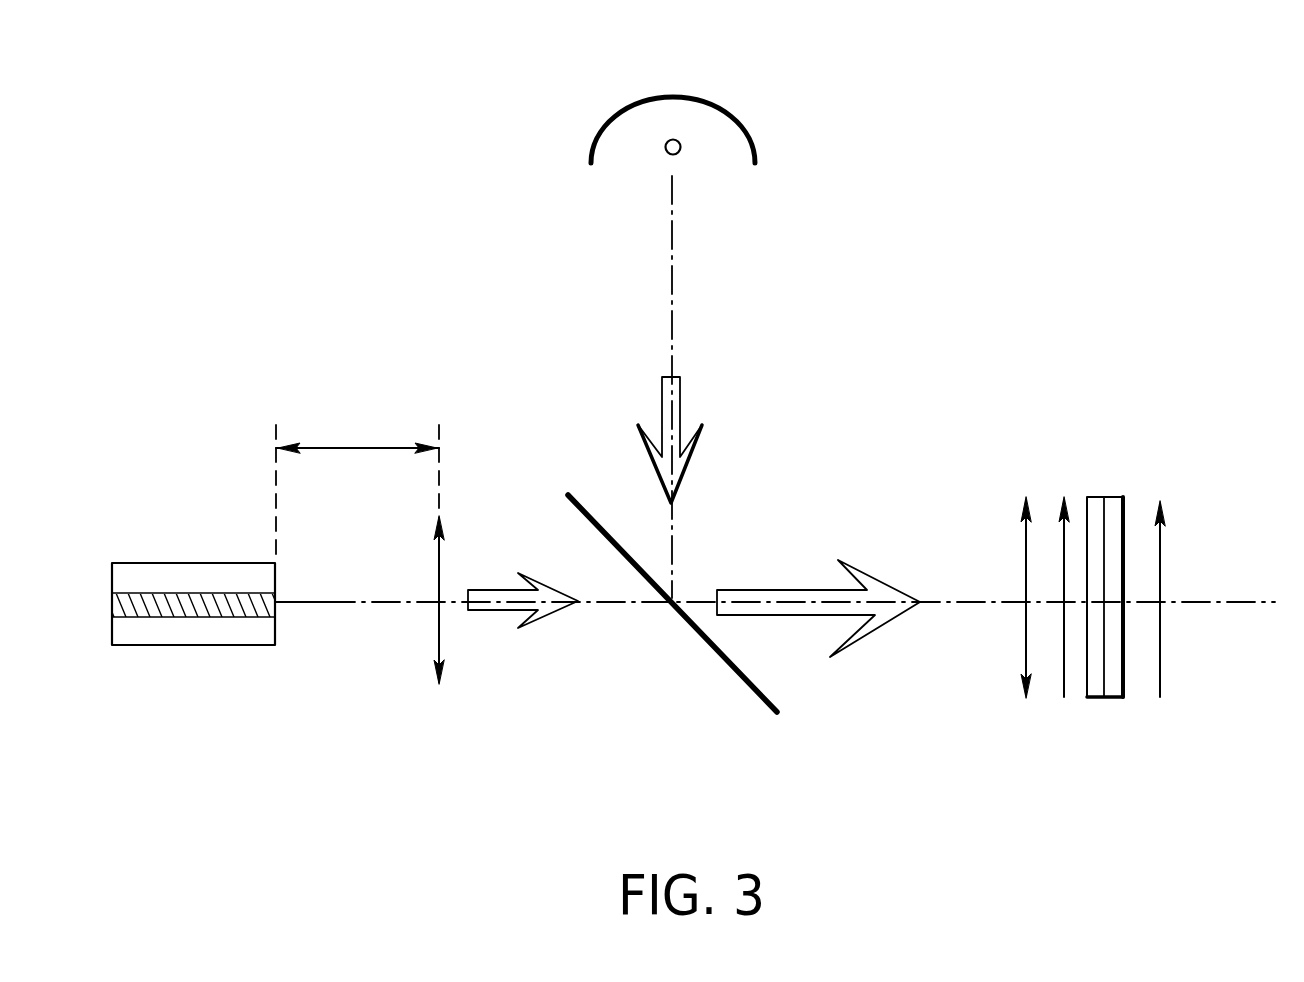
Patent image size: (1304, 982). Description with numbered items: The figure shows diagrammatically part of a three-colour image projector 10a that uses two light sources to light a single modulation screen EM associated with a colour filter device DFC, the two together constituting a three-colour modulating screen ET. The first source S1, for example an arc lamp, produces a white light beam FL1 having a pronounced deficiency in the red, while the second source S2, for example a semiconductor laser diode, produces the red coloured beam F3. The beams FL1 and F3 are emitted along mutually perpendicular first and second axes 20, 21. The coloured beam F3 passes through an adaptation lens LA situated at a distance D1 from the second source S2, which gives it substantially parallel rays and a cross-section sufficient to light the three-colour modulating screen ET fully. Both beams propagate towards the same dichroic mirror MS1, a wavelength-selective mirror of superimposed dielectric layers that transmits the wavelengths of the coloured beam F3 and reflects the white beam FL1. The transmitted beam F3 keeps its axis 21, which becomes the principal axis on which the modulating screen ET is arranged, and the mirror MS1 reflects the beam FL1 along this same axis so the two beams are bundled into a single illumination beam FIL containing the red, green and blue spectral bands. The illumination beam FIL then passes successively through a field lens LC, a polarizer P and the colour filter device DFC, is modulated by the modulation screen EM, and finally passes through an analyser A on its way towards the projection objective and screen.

The three-colour image projector 10a is at (1005, 136).
The first light source S1 is at (572, 112).
The second light source S2 is at (150, 658).
The first axis 20 is at (679, 250).
The second axis 21 is at (312, 604).
The white light beam FL1 is at (678, 405).
The distance D1 is at (338, 446).
The adaptation lens LA is at (434, 645).
The coloured beam F3 is at (497, 610).
The dichroic mirror MS1 is at (750, 687).
The illumination beam FIL is at (762, 590).
The three-colour modulating screen ET is at (1091, 450).
The field lens LC is at (1021, 667).
The polarizer P is at (1062, 683).
The modulation screen EM is at (1122, 604).
The colour filter device DFC is at (1096, 685).
The analyser A is at (1158, 685).